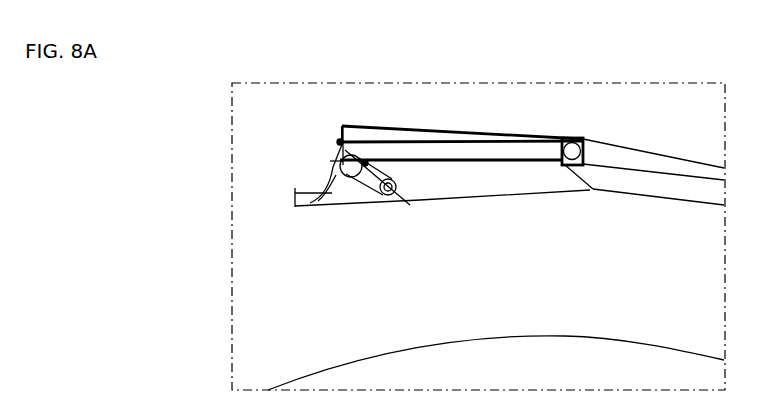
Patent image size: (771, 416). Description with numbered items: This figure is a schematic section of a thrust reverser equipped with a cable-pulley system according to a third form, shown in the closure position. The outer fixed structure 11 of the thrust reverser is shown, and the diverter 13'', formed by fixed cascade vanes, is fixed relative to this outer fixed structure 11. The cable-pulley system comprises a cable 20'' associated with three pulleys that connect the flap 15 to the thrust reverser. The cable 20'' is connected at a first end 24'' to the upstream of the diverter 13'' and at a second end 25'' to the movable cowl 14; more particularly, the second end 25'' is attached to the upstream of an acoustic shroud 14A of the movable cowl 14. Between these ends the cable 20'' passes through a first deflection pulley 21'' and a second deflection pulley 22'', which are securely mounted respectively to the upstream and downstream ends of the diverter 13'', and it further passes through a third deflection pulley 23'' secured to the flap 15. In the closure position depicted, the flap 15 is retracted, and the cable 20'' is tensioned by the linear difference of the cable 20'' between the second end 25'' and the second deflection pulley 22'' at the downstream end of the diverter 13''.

The outer fixed structure 11 is at (282, 146).
The diverter 13'' is at (417, 66).
The acoustic shroud 14A is at (430, 130).
The movable cowl 14 is at (540, 126).
The cable 20'' is at (451, 105).
The second deflection pulley 22'' is at (598, 118).
The second end 25'' is at (312, 93).
The first end 24'' is at (346, 113).
The first deflection pulley 21'' is at (442, 210).
The third deflection pulley 23'' is at (399, 218).
The flap 15 is at (577, 205).